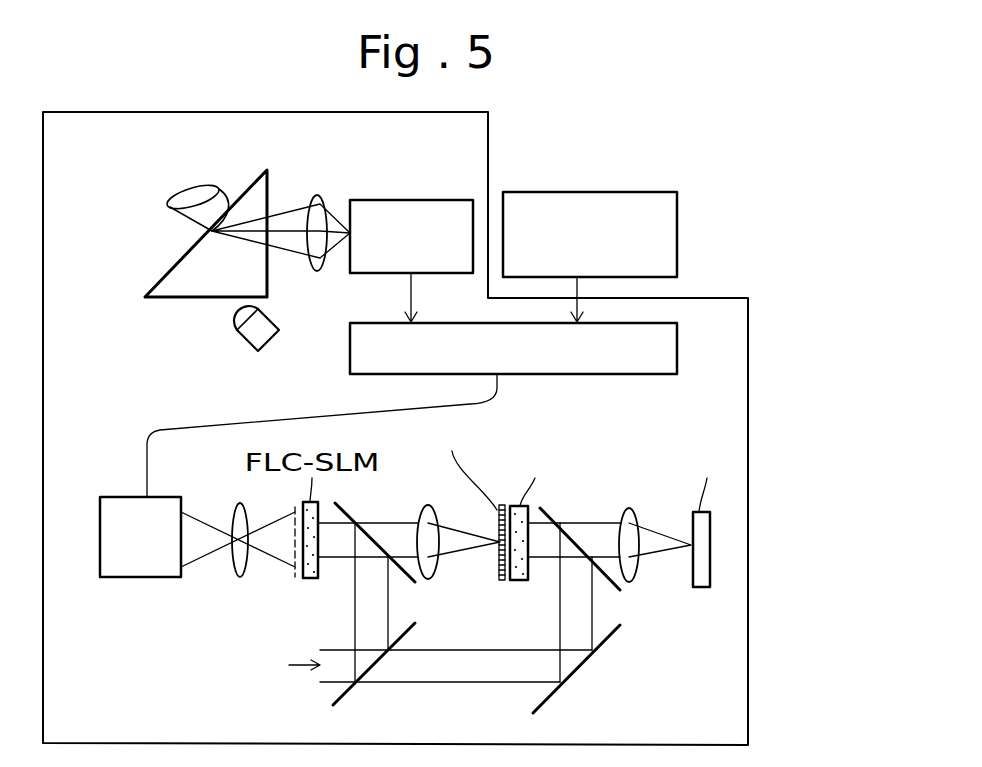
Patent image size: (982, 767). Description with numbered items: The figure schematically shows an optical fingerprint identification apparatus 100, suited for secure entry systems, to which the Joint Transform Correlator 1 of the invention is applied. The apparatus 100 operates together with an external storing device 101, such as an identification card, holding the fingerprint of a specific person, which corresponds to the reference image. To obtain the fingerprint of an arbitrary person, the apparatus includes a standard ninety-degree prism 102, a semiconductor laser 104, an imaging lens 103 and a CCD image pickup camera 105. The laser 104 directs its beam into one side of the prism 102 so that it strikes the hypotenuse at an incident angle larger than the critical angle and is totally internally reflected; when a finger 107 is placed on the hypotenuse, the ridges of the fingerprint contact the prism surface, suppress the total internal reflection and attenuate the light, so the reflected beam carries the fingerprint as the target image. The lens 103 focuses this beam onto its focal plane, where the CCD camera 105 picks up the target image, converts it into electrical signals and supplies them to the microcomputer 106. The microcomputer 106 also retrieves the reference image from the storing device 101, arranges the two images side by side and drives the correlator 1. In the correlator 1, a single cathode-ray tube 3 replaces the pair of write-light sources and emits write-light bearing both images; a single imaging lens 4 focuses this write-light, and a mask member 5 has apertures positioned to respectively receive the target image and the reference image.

The Joint Transform Correlator 1 is at (643, 434).
The cathode-ray tube 3 is at (140, 577).
The imaging lens 4 is at (236, 577).
The mask member 5 is at (296, 568).
The fingerprint identification apparatus 100 is at (750, 343).
The external storing device 101 is at (678, 240).
The prism 102 is at (175, 298).
The imaging lens 103 is at (322, 196).
The semiconductor laser 104 is at (248, 347).
The CCD image pickup camera 105 is at (412, 200).
The microcomputer 106 is at (545, 374).
The finger 107 is at (144, 230).